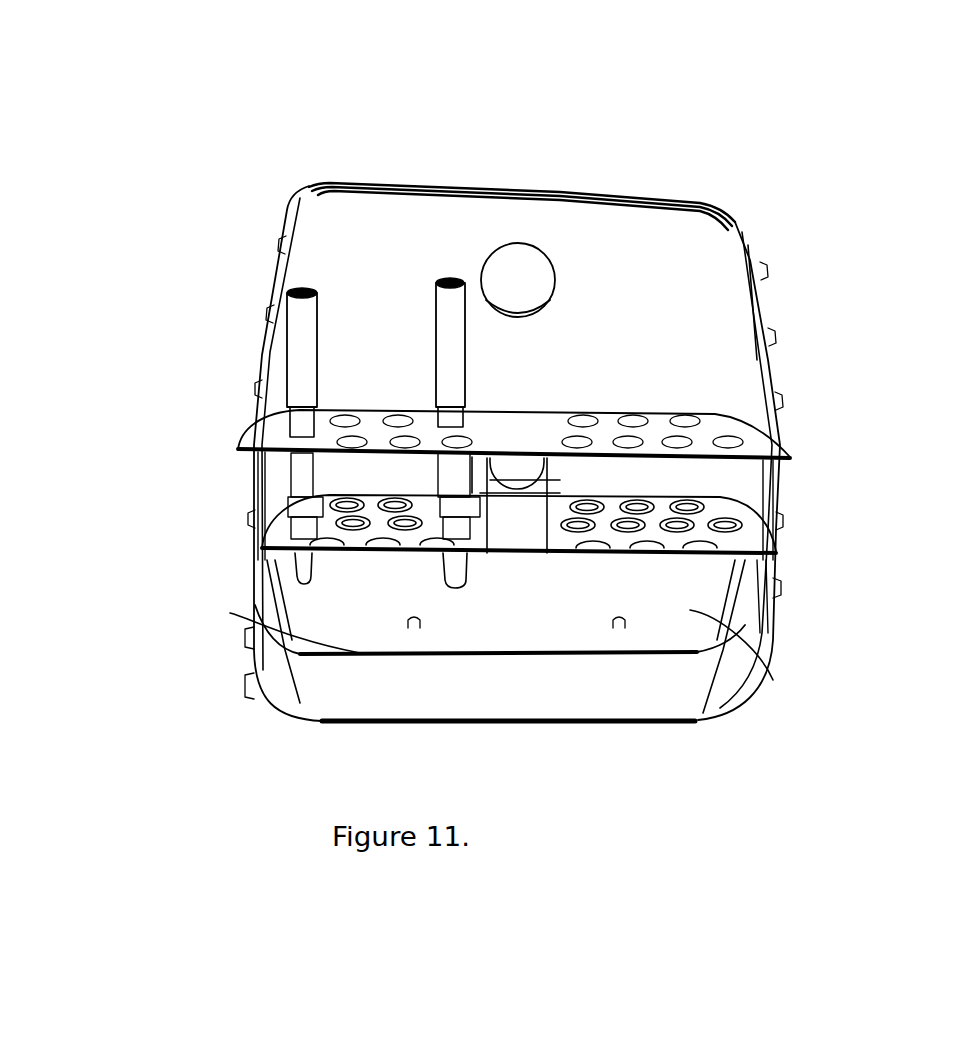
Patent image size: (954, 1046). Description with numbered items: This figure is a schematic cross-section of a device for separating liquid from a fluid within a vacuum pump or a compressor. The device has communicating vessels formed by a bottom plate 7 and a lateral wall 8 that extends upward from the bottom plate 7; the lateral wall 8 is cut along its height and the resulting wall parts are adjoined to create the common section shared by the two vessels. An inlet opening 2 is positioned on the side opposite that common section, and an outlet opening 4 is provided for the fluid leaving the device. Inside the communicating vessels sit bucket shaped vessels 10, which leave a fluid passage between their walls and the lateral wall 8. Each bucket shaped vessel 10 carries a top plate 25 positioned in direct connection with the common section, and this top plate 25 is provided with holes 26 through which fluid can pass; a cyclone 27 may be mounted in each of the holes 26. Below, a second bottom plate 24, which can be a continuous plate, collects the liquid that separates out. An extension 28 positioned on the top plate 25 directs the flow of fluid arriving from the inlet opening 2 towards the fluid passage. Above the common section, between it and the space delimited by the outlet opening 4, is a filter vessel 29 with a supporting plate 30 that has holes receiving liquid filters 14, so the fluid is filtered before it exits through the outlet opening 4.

The inlet opening 2 is at (517, 480).
The outlet opening 4 is at (517, 260).
The bottom plate 7 is at (387, 705).
The lateral wall 8 is at (773, 570).
The bucket shaped vessel 10 is at (773, 680).
The liquid filter 14 is at (443, 352).
The second bottom plate 24 is at (400, 641).
The top plate 25 is at (290, 535).
The hole 26 is at (297, 447).
The cyclone 27 is at (432, 502).
The extension 28 is at (345, 420).
The filter vessel 29 is at (363, 260).
The supporting plate 30 is at (607, 423).